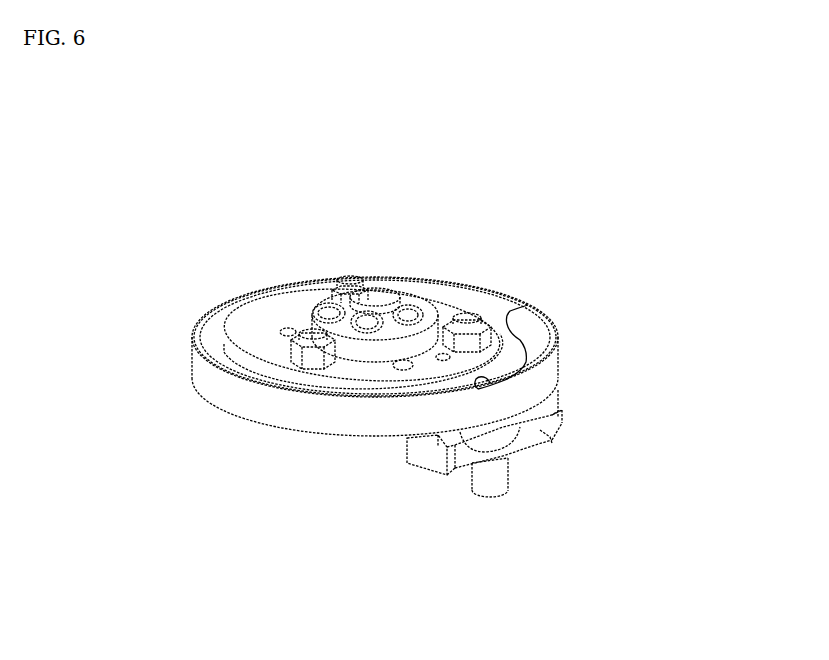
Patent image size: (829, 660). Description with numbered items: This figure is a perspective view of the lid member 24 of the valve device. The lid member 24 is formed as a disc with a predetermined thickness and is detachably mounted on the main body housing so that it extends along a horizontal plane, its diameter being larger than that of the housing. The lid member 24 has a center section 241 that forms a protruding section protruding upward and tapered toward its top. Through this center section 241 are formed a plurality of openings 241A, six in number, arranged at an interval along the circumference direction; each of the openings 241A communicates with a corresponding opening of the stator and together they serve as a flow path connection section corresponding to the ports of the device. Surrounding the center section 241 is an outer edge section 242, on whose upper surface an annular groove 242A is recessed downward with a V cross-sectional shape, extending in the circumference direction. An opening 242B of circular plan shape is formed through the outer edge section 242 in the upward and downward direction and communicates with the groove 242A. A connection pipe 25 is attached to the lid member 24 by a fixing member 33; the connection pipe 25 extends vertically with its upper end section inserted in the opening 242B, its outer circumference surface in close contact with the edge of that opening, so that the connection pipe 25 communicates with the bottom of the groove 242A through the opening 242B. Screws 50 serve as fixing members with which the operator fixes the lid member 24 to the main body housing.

The lid member 24 is at (392, 272).
The center section 241 is at (372, 293).
The openings 241A is at (347, 390).
The outer edge section 242 is at (540, 387).
The groove 242A is at (528, 305).
The opening 242B is at (477, 383).
The screws 50 is at (327, 291).
The fixing member 33 is at (563, 423).
The connection pipe 25 is at (508, 475).